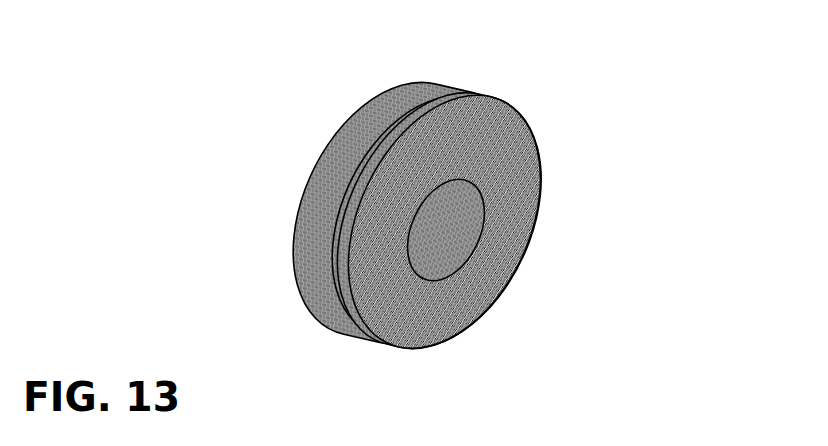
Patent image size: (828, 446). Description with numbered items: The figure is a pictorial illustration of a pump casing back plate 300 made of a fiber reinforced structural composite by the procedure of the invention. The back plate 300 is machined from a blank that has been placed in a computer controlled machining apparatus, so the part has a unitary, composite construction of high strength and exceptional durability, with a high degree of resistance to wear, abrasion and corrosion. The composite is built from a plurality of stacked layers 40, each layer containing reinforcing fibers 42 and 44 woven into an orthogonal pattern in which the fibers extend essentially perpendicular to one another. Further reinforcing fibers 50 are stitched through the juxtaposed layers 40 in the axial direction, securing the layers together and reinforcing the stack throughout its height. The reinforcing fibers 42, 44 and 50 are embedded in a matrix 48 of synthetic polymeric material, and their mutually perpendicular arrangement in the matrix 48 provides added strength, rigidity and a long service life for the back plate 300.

The pump casing back plate 300 is at (431, 220).
The further reinforcing fibers 50 is at (321, 167).
The layers 40 is at (328, 250).
The reinforcing fibers 42 is at (522, 203).
The reinforcing fibers 44 is at (526, 171).
The matrix 48 is at (495, 250).